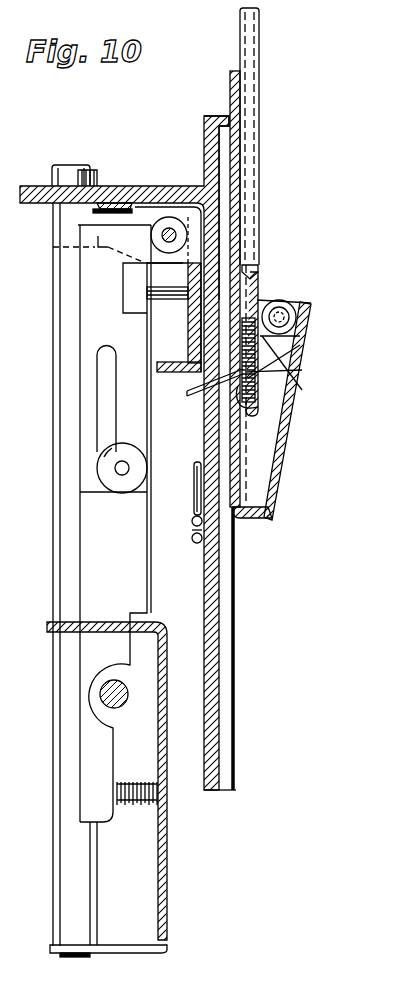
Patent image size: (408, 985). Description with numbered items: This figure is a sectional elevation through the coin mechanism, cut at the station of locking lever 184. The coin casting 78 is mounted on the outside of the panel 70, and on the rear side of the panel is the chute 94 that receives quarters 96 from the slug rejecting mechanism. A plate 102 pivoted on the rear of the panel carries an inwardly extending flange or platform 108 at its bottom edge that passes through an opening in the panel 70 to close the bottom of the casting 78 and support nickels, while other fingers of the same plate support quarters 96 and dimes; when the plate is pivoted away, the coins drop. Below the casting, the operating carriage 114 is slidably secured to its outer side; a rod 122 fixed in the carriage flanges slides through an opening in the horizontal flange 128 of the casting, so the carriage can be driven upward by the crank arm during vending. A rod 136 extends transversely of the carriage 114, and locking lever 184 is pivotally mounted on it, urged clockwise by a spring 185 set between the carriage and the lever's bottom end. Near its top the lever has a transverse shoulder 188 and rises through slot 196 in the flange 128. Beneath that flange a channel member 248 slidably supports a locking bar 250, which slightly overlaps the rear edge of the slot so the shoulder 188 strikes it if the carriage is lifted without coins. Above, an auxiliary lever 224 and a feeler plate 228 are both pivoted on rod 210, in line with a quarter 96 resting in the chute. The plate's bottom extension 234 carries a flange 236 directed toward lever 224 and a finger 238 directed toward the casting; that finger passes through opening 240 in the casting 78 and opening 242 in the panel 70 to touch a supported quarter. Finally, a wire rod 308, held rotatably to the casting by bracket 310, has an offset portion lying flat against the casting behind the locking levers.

The panel 70 is at (232, 82).
The coin casting 78 is at (216, 116).
The chute 94 is at (256, 153).
The quarters 96 is at (247, 356).
The plate 102 is at (288, 456).
The flange or platform 108 is at (258, 522).
The operating carriage 114 is at (164, 847).
The rod 122 is at (92, 858).
The horizontal flange 128 is at (160, 186).
The rod 136 is at (112, 681).
The locking lever 184 is at (97, 546).
The springs 185 is at (136, 782).
The horizontal or transverse shoulder 188 is at (53, 248).
The slot 196 is at (43, 184).
The rod 210 is at (153, 238).
The auxiliary lever 224 is at (88, 339).
The feeler plate 228 is at (183, 252).
The extension 234 is at (189, 314).
The flange 236 is at (168, 361).
The finger 238 is at (170, 390).
The opening 240 is at (198, 394).
The opening 242 is at (258, 390).
The channel member 248 is at (95, 211).
The locking bar 250 is at (118, 201).
The wire rod 308 is at (196, 480).
The bracket 310 is at (193, 524).